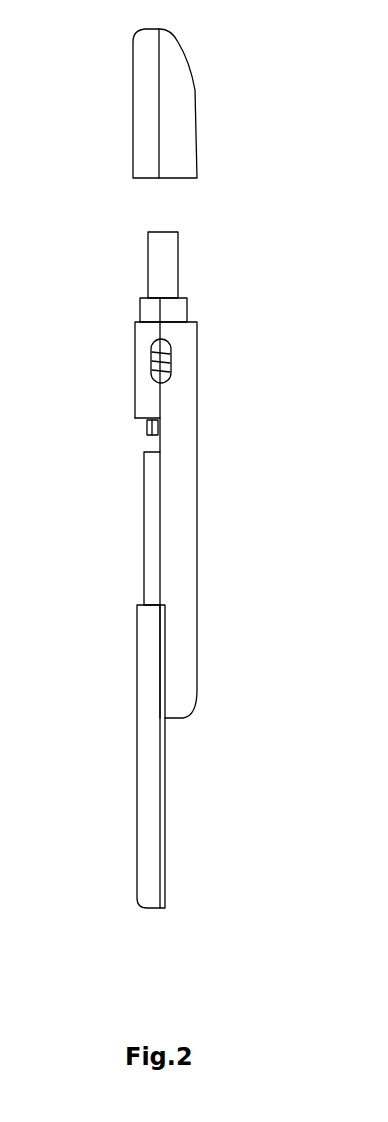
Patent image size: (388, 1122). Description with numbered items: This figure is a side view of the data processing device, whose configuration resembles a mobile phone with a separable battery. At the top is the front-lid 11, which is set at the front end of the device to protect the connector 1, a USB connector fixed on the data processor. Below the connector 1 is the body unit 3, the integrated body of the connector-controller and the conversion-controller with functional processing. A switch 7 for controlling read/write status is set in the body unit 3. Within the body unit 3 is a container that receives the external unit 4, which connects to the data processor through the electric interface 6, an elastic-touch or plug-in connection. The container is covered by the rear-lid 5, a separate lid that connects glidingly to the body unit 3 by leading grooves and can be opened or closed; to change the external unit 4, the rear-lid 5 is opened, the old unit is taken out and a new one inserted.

The front-lid 11 is at (178, 110).
The connector 1 is at (166, 270).
The body unit 3 is at (197, 490).
The switch 7 is at (152, 350).
The electric interface 6 is at (147, 430).
The external unit 4 is at (153, 558).
The rear-lid 5 is at (147, 670).